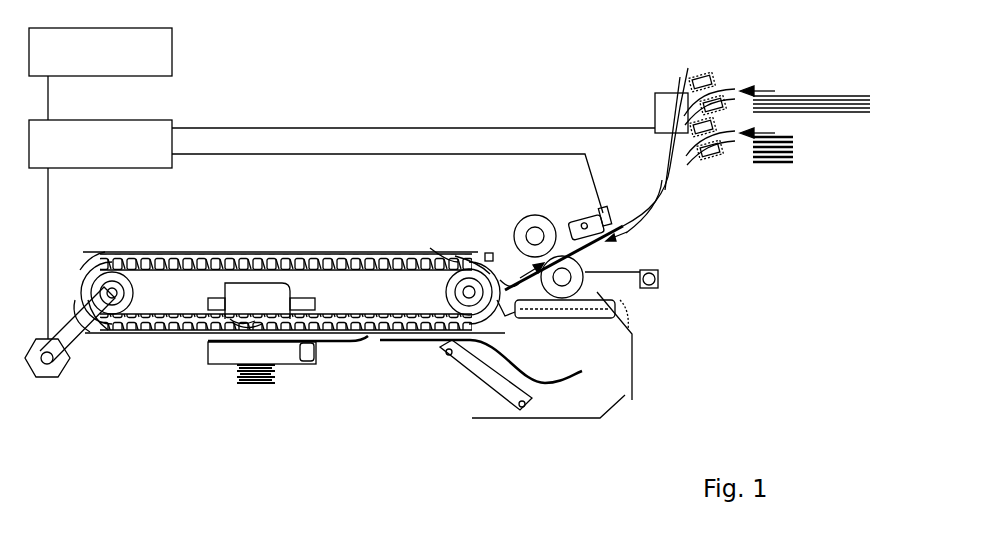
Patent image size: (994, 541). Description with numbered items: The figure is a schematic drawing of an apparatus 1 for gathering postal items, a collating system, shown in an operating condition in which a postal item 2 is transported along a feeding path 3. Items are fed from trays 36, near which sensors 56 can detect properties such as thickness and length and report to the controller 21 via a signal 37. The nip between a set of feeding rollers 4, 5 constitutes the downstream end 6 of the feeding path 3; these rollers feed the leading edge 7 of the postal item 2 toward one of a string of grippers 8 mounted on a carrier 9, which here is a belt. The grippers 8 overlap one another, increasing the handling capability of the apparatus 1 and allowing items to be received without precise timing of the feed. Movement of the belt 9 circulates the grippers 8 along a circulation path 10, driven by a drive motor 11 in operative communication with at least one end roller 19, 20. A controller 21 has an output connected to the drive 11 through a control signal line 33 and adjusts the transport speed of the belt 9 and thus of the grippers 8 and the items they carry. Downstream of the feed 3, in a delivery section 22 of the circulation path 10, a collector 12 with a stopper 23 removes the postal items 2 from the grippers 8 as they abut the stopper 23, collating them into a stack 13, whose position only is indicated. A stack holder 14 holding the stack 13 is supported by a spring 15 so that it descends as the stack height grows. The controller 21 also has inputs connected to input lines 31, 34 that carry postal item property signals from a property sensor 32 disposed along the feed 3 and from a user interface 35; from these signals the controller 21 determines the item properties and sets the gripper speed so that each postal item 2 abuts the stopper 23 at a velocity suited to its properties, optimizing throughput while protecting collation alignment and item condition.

The apparatus 1 is at (545, 60).
The postal item 2 is at (528, 280).
The feeding path 3 is at (672, 170).
The feeding roller 4 is at (538, 232).
The feeding roller 5 is at (563, 288).
The downstream end 6 is at (508, 270).
The leading edge 7 is at (520, 290).
The gripper 8 is at (486, 262).
The carrier 9 is at (310, 272).
The circulation path 10 is at (399, 242).
The drive motor 11 is at (62, 373).
The collector 12 is at (248, 318).
The stack 13 is at (292, 342).
The stack holder 14 is at (280, 362).
The spring 15 is at (250, 382).
The end roller 19 is at (134, 291).
The end roller 20 is at (445, 290).
The controller 21 is at (162, 120).
The delivery section 22 is at (330, 350).
The stopper 23 is at (235, 334).
The input line 31 is at (384, 156).
The property sensor 32 is at (608, 212).
The control signal line 33 is at (48, 231).
The input line 34 is at (48, 106).
The user interface 35 is at (172, 57).
The tray 36 is at (798, 135).
The signal 37 is at (412, 127).
The sensor 56 is at (720, 128).